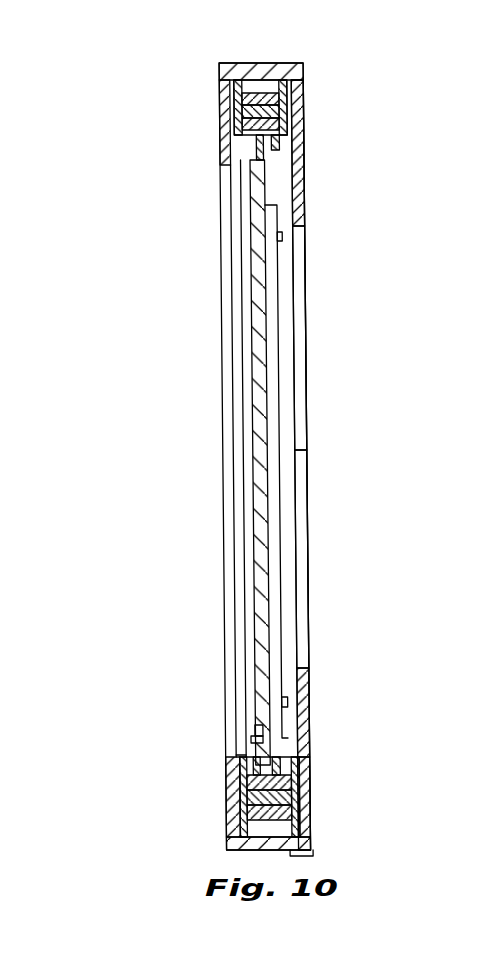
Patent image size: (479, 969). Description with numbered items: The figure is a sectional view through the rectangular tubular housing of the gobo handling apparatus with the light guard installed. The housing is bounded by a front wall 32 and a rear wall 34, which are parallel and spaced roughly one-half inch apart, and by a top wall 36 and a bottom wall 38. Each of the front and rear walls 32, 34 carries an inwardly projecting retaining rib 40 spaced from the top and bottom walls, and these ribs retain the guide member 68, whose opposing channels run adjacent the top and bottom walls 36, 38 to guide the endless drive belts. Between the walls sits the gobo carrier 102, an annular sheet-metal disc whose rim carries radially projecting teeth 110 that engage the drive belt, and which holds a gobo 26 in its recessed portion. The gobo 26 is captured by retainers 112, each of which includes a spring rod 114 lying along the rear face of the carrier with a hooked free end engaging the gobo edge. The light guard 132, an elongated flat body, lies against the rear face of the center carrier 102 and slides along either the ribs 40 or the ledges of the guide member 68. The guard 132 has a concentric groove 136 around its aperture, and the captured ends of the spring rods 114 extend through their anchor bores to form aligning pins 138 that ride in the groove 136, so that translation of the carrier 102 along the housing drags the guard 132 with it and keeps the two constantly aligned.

The gobo 26 is at (258, 397).
The front wall 32 is at (296, 226).
The rear wall 34 is at (234, 143).
The top wall 36 is at (292, 61).
The bottom wall 38 is at (292, 853).
The retaining rib 40 is at (233, 755).
The guide member 68 is at (287, 119).
The gobo carrier 102 is at (286, 477).
The teeth 110 is at (221, 783).
The retainer 112 is at (292, 295).
The spring rod 114 is at (281, 628).
The light guard 132 is at (237, 297).
The groove 136 is at (246, 736).
The aligning pin 138 is at (249, 728).